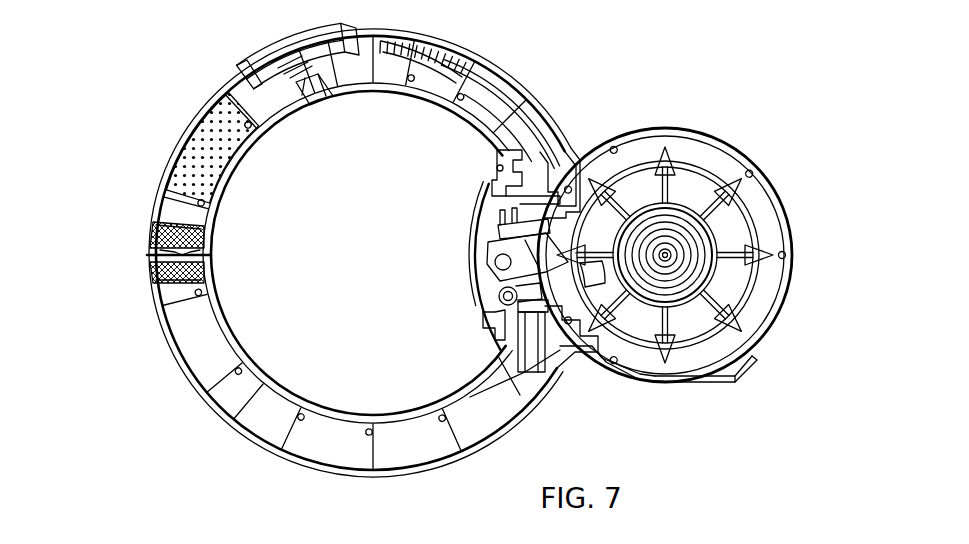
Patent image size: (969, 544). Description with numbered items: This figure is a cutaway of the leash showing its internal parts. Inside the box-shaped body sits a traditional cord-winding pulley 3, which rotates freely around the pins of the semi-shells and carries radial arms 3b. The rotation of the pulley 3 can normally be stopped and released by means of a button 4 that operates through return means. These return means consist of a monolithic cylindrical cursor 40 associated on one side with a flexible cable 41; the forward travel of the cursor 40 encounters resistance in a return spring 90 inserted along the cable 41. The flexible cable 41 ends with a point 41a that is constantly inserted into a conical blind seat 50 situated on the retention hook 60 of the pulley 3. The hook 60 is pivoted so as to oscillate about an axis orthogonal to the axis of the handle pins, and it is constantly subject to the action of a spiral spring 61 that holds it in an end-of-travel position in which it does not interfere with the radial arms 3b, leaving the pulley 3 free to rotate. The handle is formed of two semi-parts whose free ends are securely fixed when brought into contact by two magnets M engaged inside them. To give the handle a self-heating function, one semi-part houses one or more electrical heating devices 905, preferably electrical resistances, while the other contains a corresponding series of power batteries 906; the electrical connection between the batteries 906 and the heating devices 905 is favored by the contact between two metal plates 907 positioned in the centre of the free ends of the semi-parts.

The cord-winding pulley 3 is at (745, 268).
The radial arms 3b is at (763, 333).
The button 4 is at (333, 45).
The cylindrical cursor 40 is at (318, 97).
The flexible cable 41 is at (512, 84).
The point 41a is at (487, 183).
The conical blind seat 50 is at (490, 213).
The retention hook 60 is at (527, 246).
The spiral spring 61 is at (506, 296).
The return spring 90 is at (408, 50).
The electrical heating devices 905 is at (200, 137).
The power batteries 906 is at (197, 352).
The metal plates 907 is at (150, 246).
The magnets M is at (210, 233).